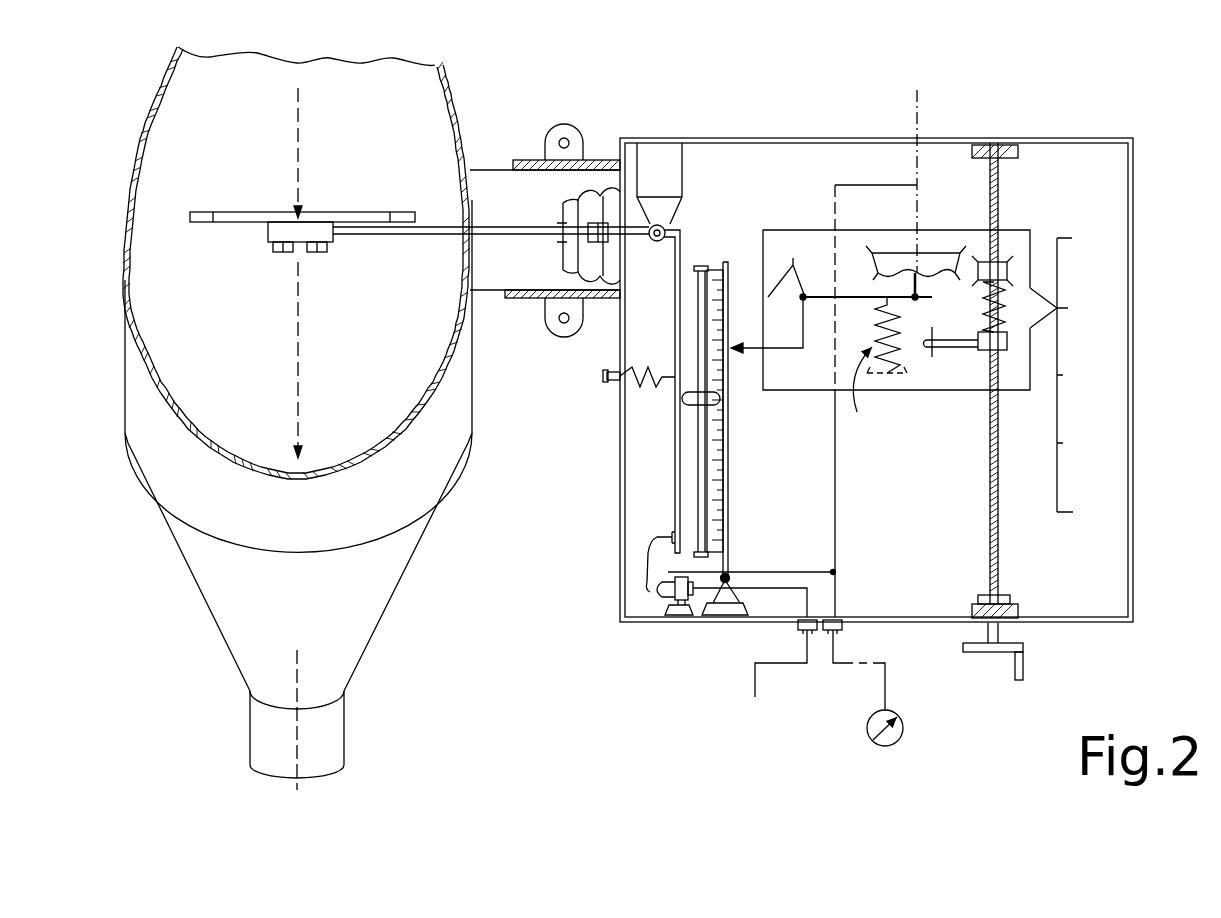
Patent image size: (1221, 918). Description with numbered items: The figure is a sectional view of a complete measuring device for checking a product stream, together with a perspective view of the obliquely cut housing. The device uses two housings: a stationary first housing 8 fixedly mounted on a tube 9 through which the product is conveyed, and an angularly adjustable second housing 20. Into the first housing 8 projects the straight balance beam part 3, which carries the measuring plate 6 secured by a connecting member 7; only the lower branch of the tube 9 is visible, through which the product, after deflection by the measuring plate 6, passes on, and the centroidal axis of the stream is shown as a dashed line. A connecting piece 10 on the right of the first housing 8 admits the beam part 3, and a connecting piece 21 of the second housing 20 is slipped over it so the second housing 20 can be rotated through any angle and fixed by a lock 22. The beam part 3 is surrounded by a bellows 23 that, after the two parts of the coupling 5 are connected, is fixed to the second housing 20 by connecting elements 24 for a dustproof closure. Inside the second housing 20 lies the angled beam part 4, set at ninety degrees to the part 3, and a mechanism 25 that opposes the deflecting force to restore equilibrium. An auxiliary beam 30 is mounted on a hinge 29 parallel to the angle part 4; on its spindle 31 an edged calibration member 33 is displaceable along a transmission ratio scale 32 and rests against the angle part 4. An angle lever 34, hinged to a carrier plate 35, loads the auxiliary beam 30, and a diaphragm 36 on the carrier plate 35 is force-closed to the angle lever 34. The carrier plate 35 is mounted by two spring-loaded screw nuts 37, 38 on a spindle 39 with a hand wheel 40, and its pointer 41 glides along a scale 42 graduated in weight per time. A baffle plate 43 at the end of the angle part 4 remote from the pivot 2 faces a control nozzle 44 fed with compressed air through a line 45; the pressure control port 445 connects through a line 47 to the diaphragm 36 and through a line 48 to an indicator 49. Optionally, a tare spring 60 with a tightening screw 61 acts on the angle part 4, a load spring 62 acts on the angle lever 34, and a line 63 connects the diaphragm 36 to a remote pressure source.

The pivot 2 is at (620, 272).
The first straight balance beam part 3 is at (458, 240).
The second angled balance beam part 4 is at (667, 467).
The coupling 5 is at (596, 255).
The measuring plate 6 is at (225, 212).
The connecting member 7 is at (265, 237).
The first housing 8 is at (477, 413).
The tube 9 is at (347, 717).
The connecting piece 10 is at (485, 165).
The second housing 20 is at (1120, 135).
The connecting piece 21 is at (520, 303).
The lock 22 is at (565, 125).
The bellows 23 is at (595, 190).
The connecting elements 24 is at (672, 222).
The mechanism 25 is at (929, 501).
The hinge 29 is at (728, 595).
The auxiliary beam 30 is at (724, 473).
The spindle 31 is at (707, 507).
The transmission ratio scale 32 is at (728, 253).
The edged calibration member 33 is at (718, 403).
The angle lever 34 is at (802, 352).
The carrier plate 35 is at (785, 227).
The diaphragm 36 is at (897, 250).
The spring-loaded screw nut 37 is at (1012, 242).
The spring-loaded screw nut 38 is at (982, 353).
The spindle 39 is at (1002, 533).
The hand wheel 40 is at (1028, 670).
The pointer 41 is at (1037, 293).
The scale 42 is at (1097, 368).
The baffle plate 43 is at (640, 590).
The control nozzle 44 is at (638, 617).
The pressure control port 445 is at (653, 600).
The line 45 is at (757, 700).
The line 47 is at (840, 438).
The line 48 is at (840, 594).
The indicator 49 is at (905, 737).
The tare spring 60 is at (652, 392).
The tightening screw 61 is at (605, 388).
The load spring 62 is at (880, 362).
The line 63 is at (918, 122).